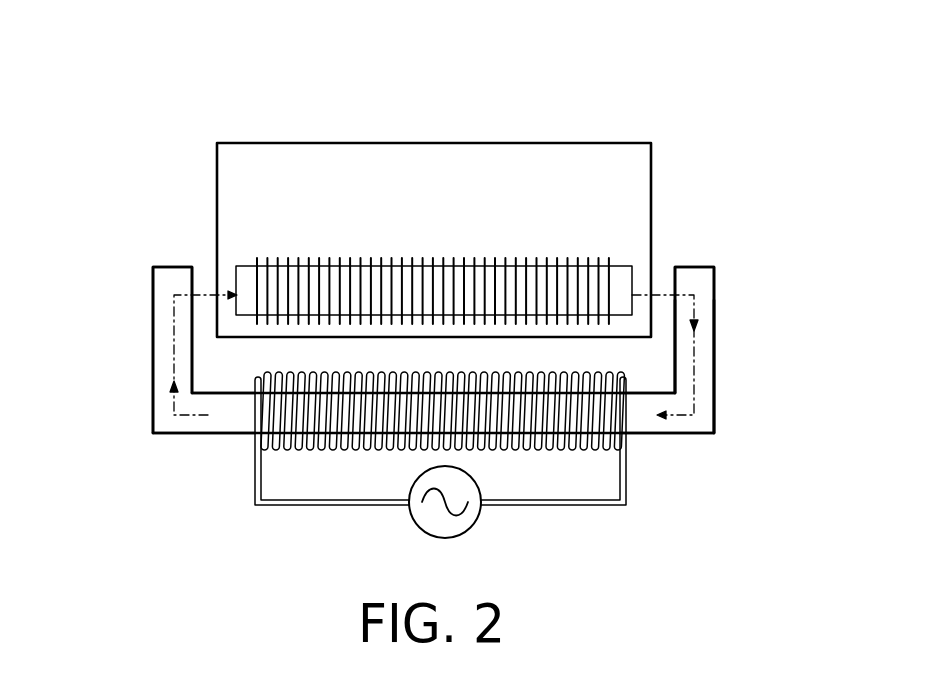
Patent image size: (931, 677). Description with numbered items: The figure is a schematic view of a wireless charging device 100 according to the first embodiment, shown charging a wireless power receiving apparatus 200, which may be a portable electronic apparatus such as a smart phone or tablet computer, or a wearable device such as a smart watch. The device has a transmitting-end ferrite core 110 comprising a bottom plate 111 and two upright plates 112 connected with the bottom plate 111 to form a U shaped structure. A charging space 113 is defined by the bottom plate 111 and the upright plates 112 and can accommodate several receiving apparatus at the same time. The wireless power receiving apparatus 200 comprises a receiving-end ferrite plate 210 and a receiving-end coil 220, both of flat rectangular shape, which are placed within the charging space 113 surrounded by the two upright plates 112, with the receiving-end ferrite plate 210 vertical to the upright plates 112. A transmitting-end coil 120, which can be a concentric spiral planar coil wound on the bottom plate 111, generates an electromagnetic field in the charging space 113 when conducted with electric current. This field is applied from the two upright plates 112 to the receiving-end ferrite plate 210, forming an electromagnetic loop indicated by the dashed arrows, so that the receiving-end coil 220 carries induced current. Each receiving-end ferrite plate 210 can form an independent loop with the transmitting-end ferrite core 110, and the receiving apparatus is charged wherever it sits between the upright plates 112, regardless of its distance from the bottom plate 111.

The wireless charging device 100 is at (219, 482).
The transmitting-end ferrite core 110 is at (650, 428).
The bottom plate 111 is at (225, 425).
The upright plates 112 is at (160, 330).
The charging space 113 is at (643, 358).
The transmitting-end coil 120 is at (362, 450).
The wireless power receiving apparatus 200 is at (610, 112).
The receiving-end ferrite plate 210 is at (242, 276).
The receiving-end coil 220 is at (608, 256).